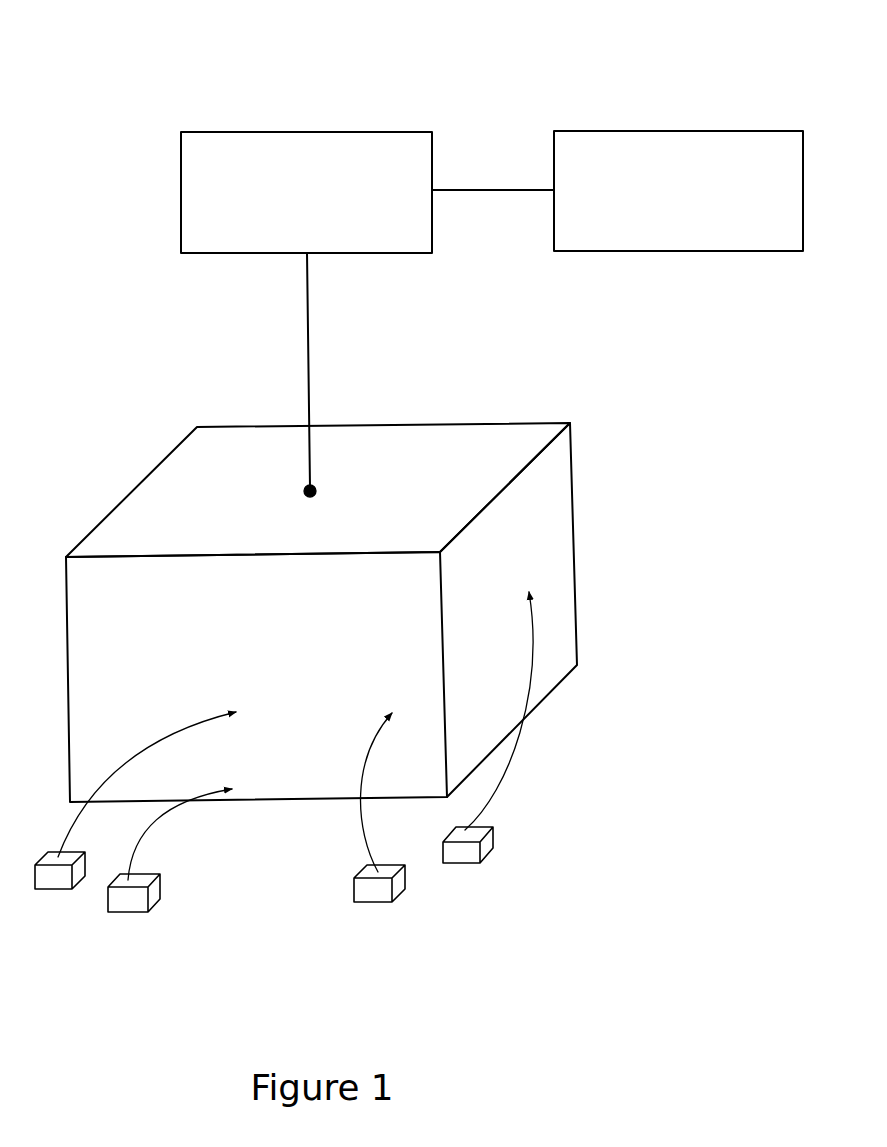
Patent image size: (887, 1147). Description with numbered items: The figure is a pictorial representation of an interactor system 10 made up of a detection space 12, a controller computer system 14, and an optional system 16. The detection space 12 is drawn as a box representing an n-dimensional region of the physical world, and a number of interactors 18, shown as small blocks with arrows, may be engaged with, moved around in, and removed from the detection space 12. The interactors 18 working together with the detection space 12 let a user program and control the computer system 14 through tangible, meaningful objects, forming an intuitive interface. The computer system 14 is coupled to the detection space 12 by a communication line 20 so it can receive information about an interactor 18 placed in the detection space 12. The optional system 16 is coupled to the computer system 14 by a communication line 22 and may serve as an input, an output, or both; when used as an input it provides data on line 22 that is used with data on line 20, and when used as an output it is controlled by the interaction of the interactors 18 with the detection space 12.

The interactor system 10 is at (101, 58).
The detection space 12 is at (197, 426).
The controller computer system 14 is at (231, 131).
The optional system 16 is at (604, 131).
The interactors 18 is at (130, 903).
The communication line 20 is at (308, 349).
The communication line 22 is at (525, 189).